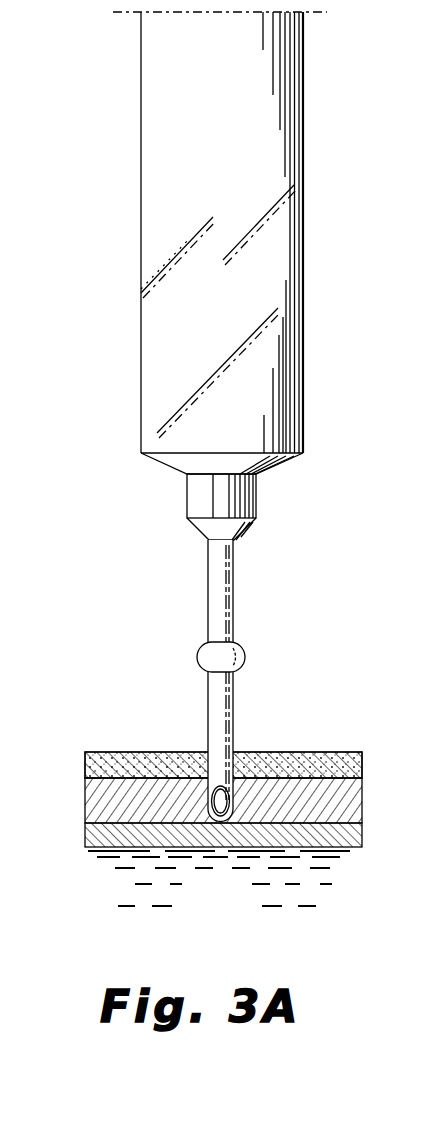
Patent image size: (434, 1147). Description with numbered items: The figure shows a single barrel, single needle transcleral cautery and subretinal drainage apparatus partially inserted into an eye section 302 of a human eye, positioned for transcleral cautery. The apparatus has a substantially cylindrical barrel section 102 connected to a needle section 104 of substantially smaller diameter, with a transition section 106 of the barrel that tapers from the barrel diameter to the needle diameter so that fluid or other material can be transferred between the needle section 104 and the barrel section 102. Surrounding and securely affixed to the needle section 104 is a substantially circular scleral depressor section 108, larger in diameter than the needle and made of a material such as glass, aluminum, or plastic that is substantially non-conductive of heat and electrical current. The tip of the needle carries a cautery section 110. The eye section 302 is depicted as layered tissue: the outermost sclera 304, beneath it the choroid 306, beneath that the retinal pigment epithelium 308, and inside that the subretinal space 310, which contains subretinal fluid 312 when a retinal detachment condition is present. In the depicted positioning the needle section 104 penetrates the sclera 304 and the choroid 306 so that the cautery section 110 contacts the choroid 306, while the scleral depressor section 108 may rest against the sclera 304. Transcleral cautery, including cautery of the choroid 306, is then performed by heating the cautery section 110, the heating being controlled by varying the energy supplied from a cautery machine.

The barrel section 102 is at (302, 292).
The needle section 104 is at (208, 612).
The transition section 106 is at (317, 452).
The scleral depressor section 108 is at (245, 660).
The cautery section 110 is at (208, 755).
The eye section 302 is at (224, 835).
The sclera 304 is at (77, 753).
The choroid 306 is at (77, 783).
The retinal pigment epithelium 308 is at (77, 825).
The subretinal space 310 is at (77, 852).
The subretinal fluid 312 is at (238, 916).